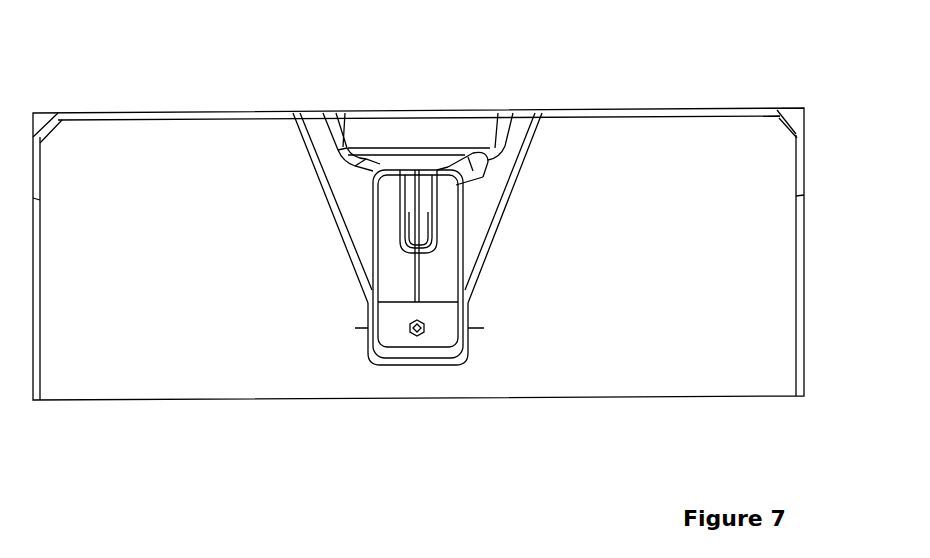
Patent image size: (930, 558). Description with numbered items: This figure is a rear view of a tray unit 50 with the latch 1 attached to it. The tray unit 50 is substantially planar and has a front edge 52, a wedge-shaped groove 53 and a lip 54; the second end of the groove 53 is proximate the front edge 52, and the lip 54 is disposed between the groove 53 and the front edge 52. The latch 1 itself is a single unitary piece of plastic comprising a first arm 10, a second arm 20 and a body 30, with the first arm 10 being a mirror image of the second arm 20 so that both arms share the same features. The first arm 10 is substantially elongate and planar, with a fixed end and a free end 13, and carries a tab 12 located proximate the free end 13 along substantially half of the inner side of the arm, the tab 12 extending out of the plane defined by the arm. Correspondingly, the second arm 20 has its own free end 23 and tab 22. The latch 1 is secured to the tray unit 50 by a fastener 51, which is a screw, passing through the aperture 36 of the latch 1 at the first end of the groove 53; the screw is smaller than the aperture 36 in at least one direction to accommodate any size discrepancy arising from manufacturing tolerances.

The latch 1 is at (351, 80).
The first arm 10 is at (468, 303).
The tab 12 is at (428, 165).
The free end 13 is at (443, 163).
The second arm 20 is at (387, 253).
The tab 22 is at (410, 172).
The free end 23 is at (377, 165).
The body 30 is at (387, 327).
The aperture 36 is at (417, 337).
The tray unit 50 is at (647, 145).
The fastener 51 is at (425, 337).
The front edge 52 is at (121, 112).
The wedge-shaped groove 53 is at (493, 185).
The lip 54 is at (415, 126).